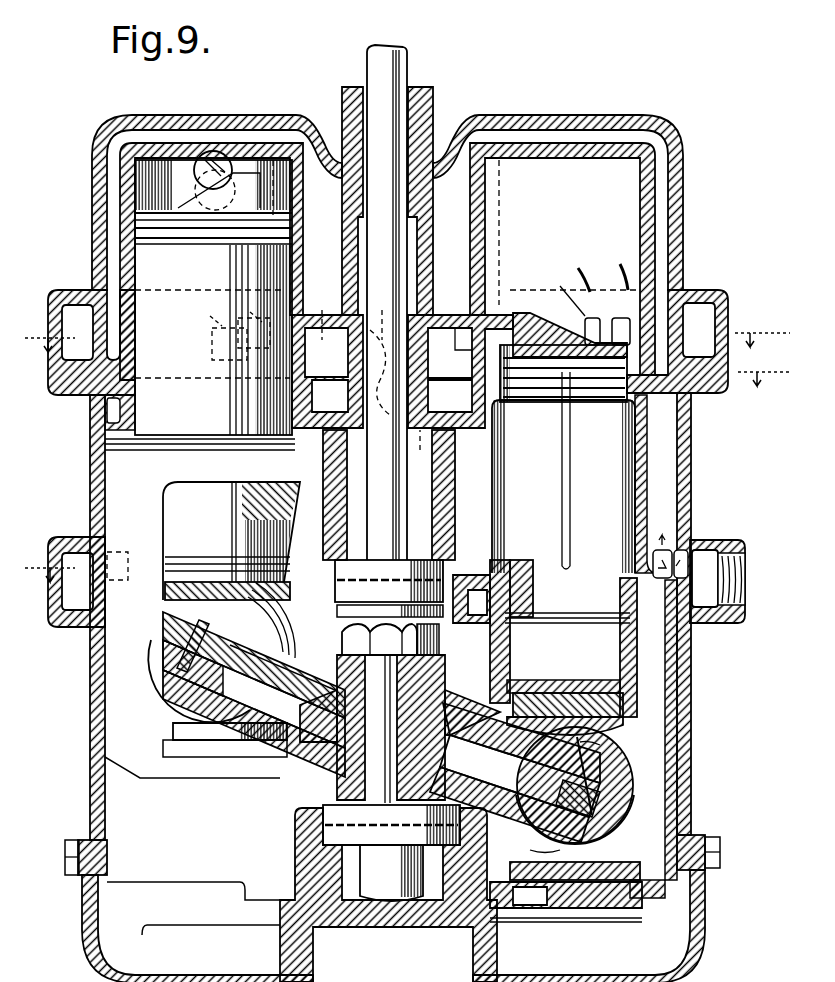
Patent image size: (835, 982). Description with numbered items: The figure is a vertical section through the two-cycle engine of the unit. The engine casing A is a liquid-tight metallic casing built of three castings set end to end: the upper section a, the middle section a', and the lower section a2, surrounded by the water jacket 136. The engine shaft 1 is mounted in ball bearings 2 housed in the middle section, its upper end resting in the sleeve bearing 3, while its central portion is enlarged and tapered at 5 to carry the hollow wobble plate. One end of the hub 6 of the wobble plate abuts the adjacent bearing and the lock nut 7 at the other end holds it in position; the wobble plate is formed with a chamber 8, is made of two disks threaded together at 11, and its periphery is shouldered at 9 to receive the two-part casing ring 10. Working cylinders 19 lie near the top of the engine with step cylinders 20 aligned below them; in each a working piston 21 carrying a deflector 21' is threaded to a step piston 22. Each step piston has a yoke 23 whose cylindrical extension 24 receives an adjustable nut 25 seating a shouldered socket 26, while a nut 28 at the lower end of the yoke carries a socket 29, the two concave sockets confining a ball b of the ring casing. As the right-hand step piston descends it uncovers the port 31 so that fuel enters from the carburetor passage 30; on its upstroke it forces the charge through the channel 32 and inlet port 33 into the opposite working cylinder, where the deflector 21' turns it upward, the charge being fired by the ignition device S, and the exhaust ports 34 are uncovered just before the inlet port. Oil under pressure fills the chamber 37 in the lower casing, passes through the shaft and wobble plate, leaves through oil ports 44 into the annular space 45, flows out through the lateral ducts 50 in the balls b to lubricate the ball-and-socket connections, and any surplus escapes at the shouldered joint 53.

The engine shaft 1 is at (392, 133).
The ball bearings 2 is at (356, 566).
The sleeve bearing 3 is at (418, 186).
The enlarged tapered section of shaft 5 is at (376, 692).
The hub of wobble plate 6 is at (348, 782).
The lock nut 7 is at (432, 639).
The chamber of wobble plate 8 is at (296, 665).
The shouldered periphery of wobble plate 9 is at (250, 650).
The casing ring 10 is at (632, 853).
The threaded joint of wobble plate parts 11 is at (222, 661).
The working cylinders 19 is at (142, 184).
The step cylinders 20 is at (265, 530).
The working piston 21 is at (177, 297).
The deflector 21' is at (439, 354).
The step piston 22 is at (122, 461).
The yoke 23 is at (120, 652).
The cylindrical extension 24 is at (320, 507).
The adjustable nut 25 is at (282, 570).
The shouldered socket 26 is at (186, 582).
The nut 28 is at (240, 760).
The socket 29 is at (195, 762).
The carburetor passage 30 is at (72, 590).
The port 31 is at (115, 551).
The channel 32 is at (402, 376).
The inlet port 33 is at (240, 327).
The exhaust ports 34 is at (598, 320).
The chamber 37 is at (433, 880).
The oil ports 44 is at (572, 797).
The annular space 45 is at (600, 796).
The lateral ducts 50 is at (600, 745).
The shouldered joint 53 is at (290, 660).
The water jacket 136 is at (110, 232).
The ignition device S is at (215, 158).
The engine casing A is at (712, 435).
The upper section a is at (388, 255).
The middle section a' is at (679, 645).
The lower section a2 is at (702, 946).
The ball b is at (252, 616).